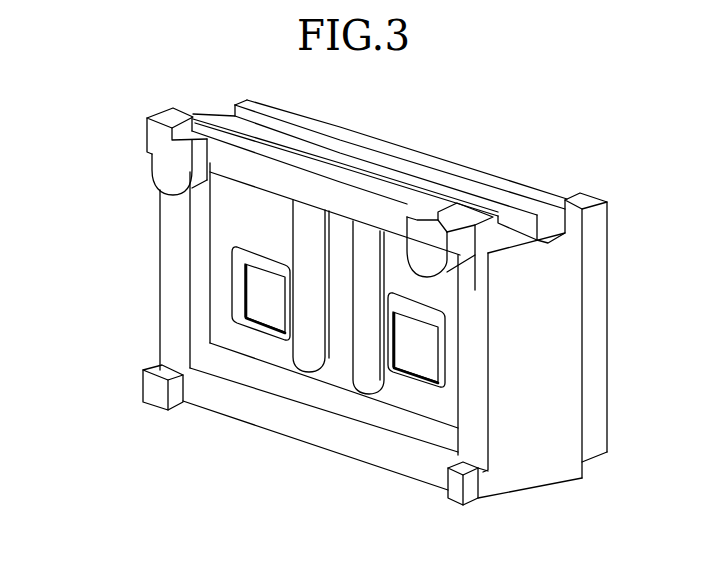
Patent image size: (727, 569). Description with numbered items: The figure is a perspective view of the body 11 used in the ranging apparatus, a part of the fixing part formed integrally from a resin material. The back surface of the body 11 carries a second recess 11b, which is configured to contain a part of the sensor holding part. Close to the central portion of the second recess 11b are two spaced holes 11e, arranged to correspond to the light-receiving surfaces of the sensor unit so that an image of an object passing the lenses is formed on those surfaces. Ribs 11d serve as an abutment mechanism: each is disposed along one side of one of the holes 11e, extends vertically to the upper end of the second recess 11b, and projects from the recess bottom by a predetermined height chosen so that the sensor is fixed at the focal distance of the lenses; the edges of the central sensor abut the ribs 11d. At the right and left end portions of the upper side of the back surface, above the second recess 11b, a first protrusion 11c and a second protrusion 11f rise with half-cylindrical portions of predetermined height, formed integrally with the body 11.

The body 11 is at (552, 355).
The second recess 11b is at (155, 302).
The first protrusion 11c is at (422, 243).
The ribs 11d is at (386, 395).
The holes 11e is at (259, 306).
The second protrusion 11f is at (154, 176).